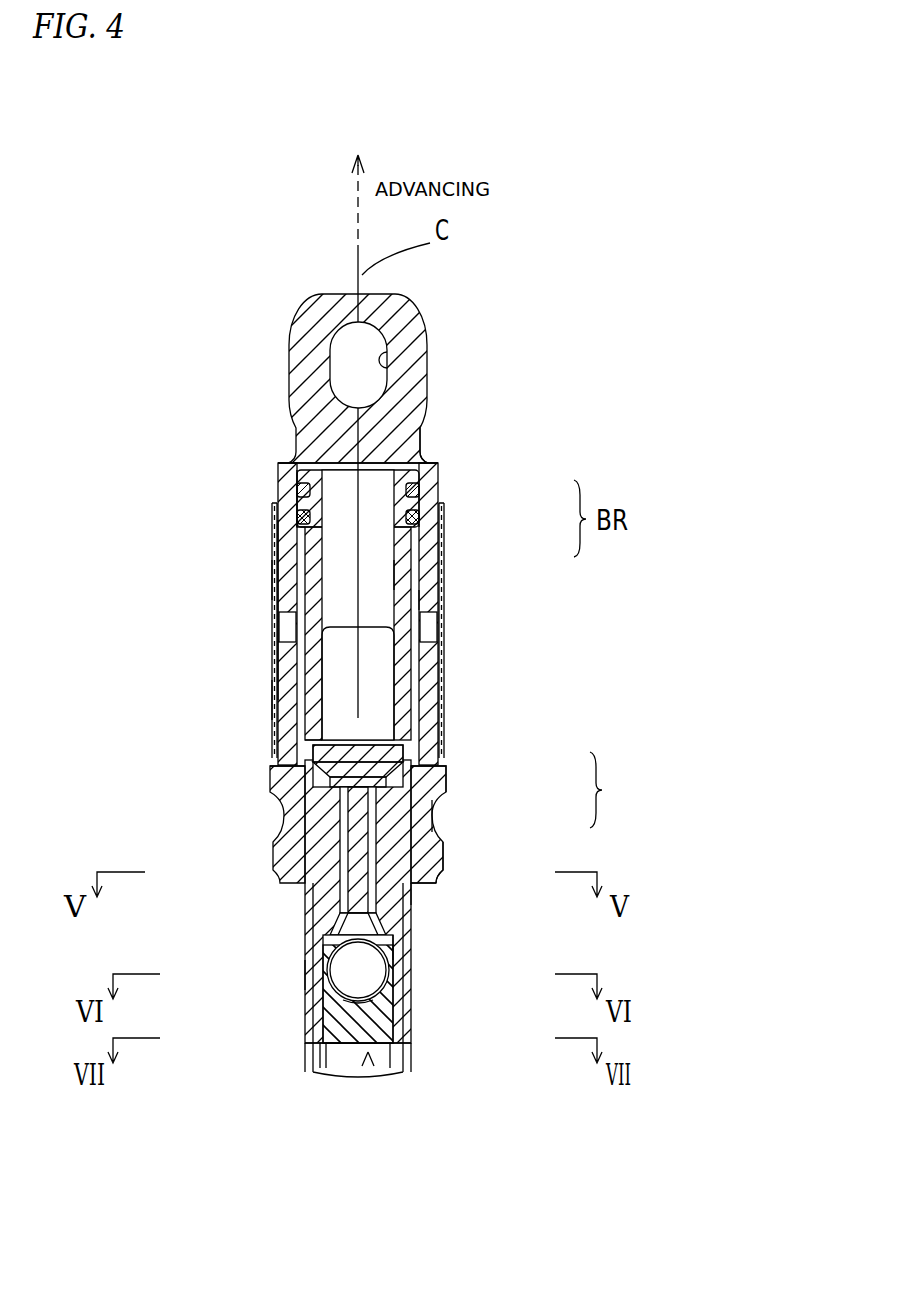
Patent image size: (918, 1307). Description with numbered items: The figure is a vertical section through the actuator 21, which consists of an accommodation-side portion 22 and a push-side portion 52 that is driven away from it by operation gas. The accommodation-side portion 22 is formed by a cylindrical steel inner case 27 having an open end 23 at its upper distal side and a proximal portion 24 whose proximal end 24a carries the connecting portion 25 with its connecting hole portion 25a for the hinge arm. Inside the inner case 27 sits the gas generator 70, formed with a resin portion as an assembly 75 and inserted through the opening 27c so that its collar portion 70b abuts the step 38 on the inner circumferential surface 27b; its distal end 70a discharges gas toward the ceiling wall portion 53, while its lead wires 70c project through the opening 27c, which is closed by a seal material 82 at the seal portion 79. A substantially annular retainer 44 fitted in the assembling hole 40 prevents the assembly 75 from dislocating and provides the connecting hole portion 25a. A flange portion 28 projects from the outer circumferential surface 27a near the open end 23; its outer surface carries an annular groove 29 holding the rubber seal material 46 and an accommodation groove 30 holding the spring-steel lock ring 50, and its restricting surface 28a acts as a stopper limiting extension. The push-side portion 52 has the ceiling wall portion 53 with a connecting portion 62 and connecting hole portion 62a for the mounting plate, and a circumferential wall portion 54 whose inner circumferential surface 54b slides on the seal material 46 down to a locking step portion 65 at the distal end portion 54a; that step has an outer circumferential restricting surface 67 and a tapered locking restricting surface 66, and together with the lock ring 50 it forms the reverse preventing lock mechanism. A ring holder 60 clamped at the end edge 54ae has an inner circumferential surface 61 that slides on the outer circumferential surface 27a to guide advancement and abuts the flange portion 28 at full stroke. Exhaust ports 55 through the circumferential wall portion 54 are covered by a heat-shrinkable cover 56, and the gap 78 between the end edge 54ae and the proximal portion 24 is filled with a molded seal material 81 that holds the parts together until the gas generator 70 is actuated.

The actuator 21 is at (205, 255).
The accommodation-side portion 22 is at (420, 1042).
The open end 23 is at (305, 440).
The proximal portion 24 is at (288, 1037).
The proximal end 24a is at (314, 1062).
The connecting portion 25 is at (370, 987).
The connecting hole portion 25a is at (354, 1002).
The inner case 27 is at (305, 946).
The outer circumferential surface 27a is at (276, 692).
The inner circumferential surface 27b is at (277, 576).
The opening 27c is at (396, 1076).
The flange portion 28 is at (283, 459).
The restricting surface 28a is at (285, 547).
The annular groove 29 is at (428, 456).
The accommodation groove 30 is at (416, 526).
The step 38 is at (400, 750).
The assembling hole 40 is at (300, 976).
The retainer 44 is at (395, 975).
The seal material 46 is at (413, 489).
The lock ring 50 is at (416, 512).
The push-side portion 52 is at (440, 305).
The ceiling wall portion 53 is at (300, 432).
The circumferential wall portion 54 is at (430, 685).
The distal end portion 54a is at (475, 837).
The end edge 54ae is at (265, 872).
The inner circumferential surface 54b is at (440, 712).
The exhaust ports 55 is at (287, 626).
The cover 56 is at (438, 600).
The ring holder 60 is at (322, 842).
The inner circumferential surface 61 is at (327, 806).
The connecting portion 62 is at (326, 315).
The connecting hole portion 62a is at (392, 365).
The locking step portion 65 is at (522, 828).
The locking restricting surface 66 is at (434, 757).
The outer circumferential restricting surface 67 is at (433, 807).
The gas generator 70 is at (372, 668).
The distal end 70a is at (400, 576).
The collar portion 70b is at (318, 752).
The lead wires 70c is at (323, 1010).
The assembly 75 is at (300, 850).
The gap 78 is at (432, 888).
The seal portion 79 is at (368, 1054).
The seal material 81 is at (420, 925).
The seal material 82 is at (332, 1058).